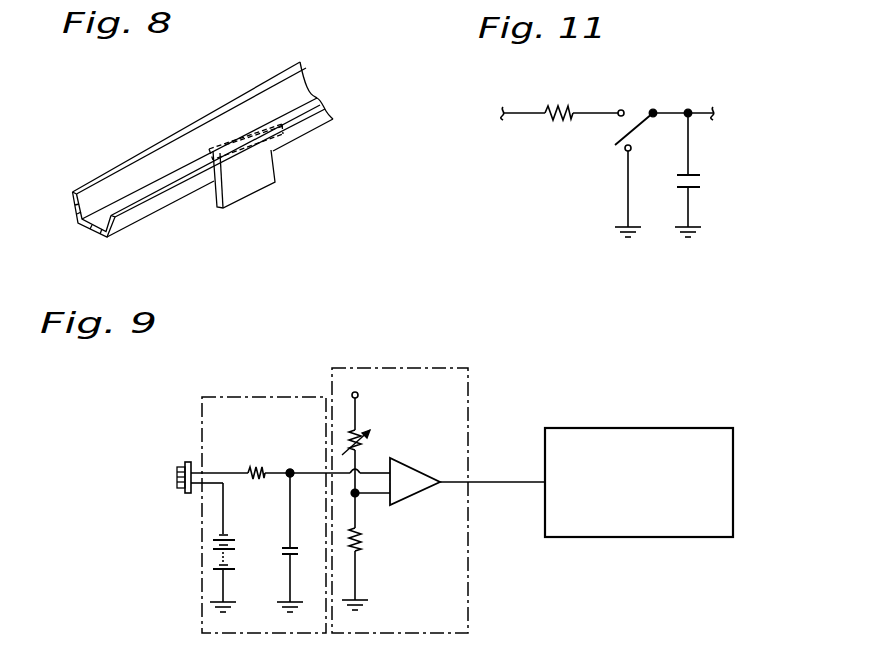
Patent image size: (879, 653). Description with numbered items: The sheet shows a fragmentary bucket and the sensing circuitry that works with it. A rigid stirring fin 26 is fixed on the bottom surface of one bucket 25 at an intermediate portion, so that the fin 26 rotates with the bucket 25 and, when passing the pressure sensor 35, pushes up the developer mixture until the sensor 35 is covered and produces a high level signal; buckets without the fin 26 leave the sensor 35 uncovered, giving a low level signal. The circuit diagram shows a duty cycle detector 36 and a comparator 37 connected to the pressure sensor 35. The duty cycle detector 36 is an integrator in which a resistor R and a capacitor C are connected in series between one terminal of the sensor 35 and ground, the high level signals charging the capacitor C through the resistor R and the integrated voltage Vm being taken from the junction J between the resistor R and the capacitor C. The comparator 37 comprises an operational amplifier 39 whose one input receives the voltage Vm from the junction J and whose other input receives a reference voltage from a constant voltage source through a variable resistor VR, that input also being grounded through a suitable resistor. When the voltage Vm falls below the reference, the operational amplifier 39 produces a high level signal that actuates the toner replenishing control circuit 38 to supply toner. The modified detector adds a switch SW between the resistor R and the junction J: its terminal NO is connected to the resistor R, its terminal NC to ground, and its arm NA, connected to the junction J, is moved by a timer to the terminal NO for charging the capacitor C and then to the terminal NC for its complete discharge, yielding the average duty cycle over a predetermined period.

In FIG. 8, the bucket roller 25 is at (167, 150).
In FIG. 8, the stirring fin 26 is at (232, 188).
In FIG. 9, the pressure sensor 35 is at (177, 479).
In FIG. 9, the duty cycle detector 36 is at (242, 397).
In FIG. 9, the comparator 37 is at (468, 398).
In FIG. 9, the toner replenishing control circuit 38 is at (618, 538).
In FIG. 9, the operational amplifier 39 is at (420, 467).
In FIG. 11, the resistor R is at (559, 96).
In FIG. 9, the resistor R is at (252, 468).
In FIG. 11, the capacitor C is at (703, 180).
In FIG. 9, the capacitor C is at (299, 550).
In FIG. 11, the junction J is at (689, 110).
In FIG. 9, the junction J is at (292, 476).
In FIG. 9, the integrated voltage signal Vm is at (298, 455).
In FIG. 9, the variable resistor VR is at (375, 437).
In FIG. 11, the switch SW is at (642, 112).
In FIG. 11, the terminal NO is at (614, 98).
In FIG. 11, the terminal NC is at (645, 150).
In FIG. 11, the arm NA is at (643, 124).